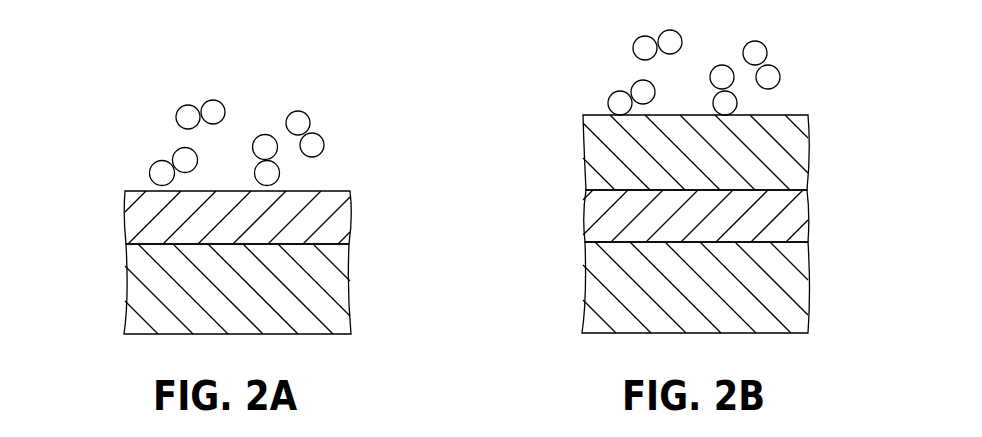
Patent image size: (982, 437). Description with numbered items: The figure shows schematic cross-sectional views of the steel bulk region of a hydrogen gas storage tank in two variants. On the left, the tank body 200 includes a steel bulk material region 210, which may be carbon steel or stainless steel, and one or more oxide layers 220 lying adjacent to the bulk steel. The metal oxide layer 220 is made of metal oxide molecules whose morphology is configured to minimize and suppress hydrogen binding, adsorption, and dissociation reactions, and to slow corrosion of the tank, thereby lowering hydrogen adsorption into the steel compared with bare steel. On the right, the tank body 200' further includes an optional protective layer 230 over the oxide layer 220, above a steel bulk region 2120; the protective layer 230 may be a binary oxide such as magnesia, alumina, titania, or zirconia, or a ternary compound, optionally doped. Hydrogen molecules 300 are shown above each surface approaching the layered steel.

In FIG. 2A, the composite structure 200 is at (214, 203).
In FIG. 2B, the composite structure with additional layer 200' is at (669, 169).
In FIG. 2A, the substrate layer 210 is at (350, 290).
In FIG. 2A, the coating layer 220 is at (350, 217).
In FIG. 2B, the coating layer 220 is at (810, 218).
In FIG. 2B, the outer coating layer 230 is at (810, 152).
In FIG. 2B, the substrate layer 2120 is at (810, 295).
In FIG. 2A, the gas molecules 300 is at (310, 128).
In FIG. 2B, the gas molecules 300 is at (767, 62).